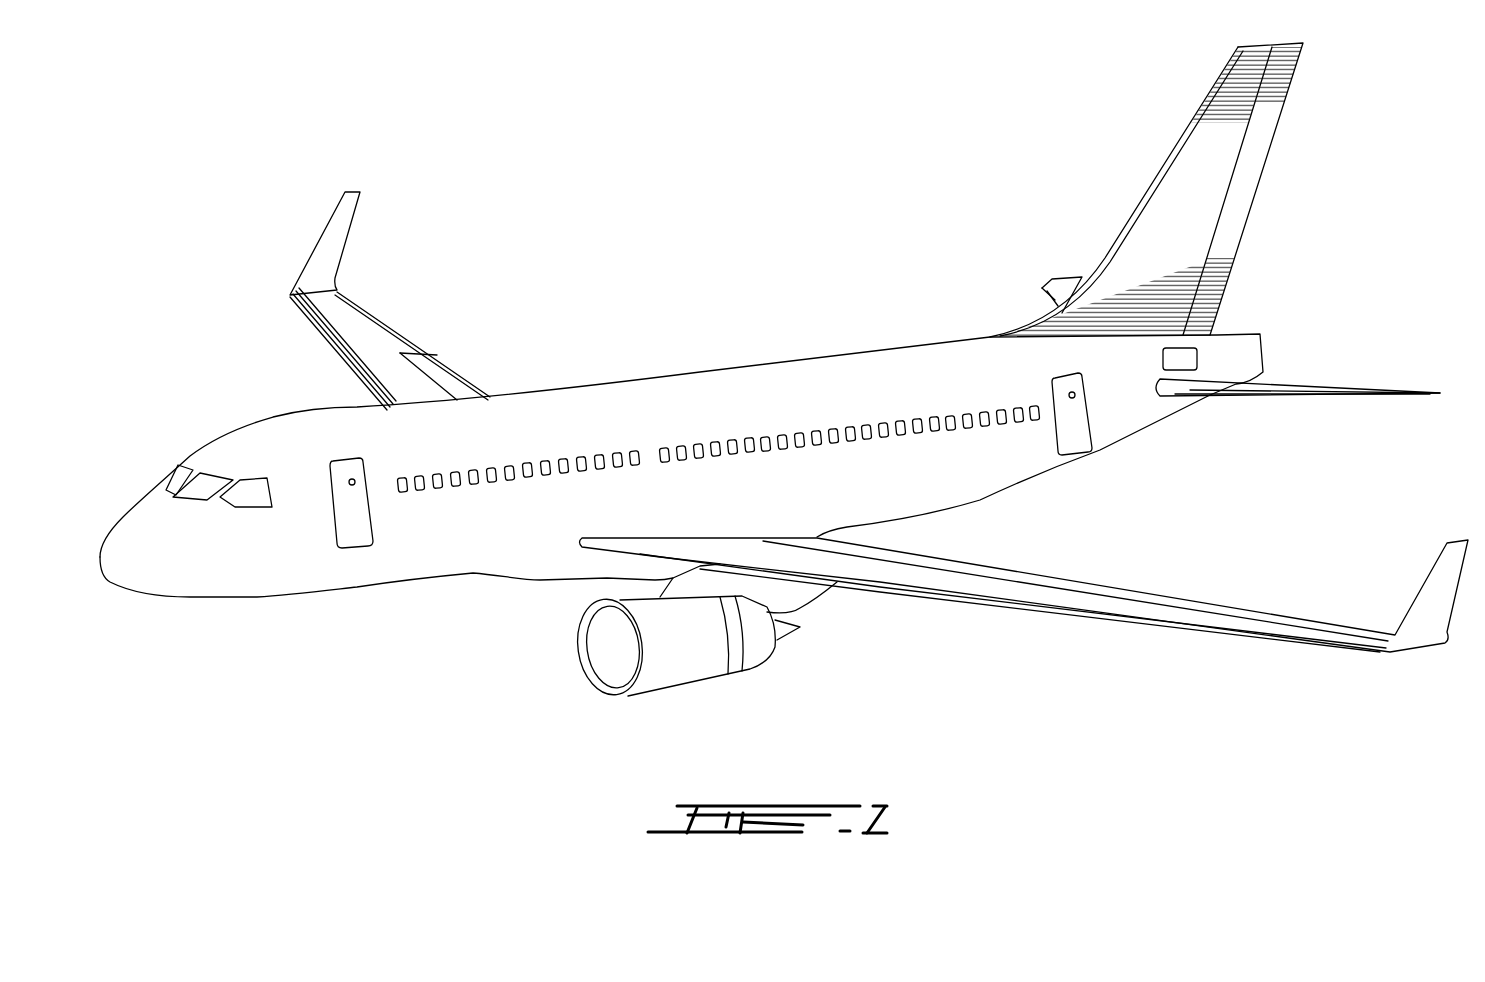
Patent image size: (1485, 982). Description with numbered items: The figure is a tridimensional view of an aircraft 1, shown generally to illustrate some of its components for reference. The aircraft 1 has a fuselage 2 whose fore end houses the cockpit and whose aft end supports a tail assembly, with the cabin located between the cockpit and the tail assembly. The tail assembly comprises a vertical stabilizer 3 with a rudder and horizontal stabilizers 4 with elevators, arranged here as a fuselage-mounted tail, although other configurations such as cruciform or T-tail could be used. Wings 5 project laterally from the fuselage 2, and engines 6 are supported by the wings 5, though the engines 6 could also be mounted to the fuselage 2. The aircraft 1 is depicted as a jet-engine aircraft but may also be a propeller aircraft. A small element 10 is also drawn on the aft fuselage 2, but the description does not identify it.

The aircraft 1 is at (650, 282).
The fuselage 2 is at (425, 550).
The vertical stabilizer 3 is at (1180, 185).
The horizontal stabilizers 4 is at (1057, 292).
The wings 5 is at (370, 343).
The engines 6 is at (732, 660).
The sensor arrangement 10 is at (1183, 358).